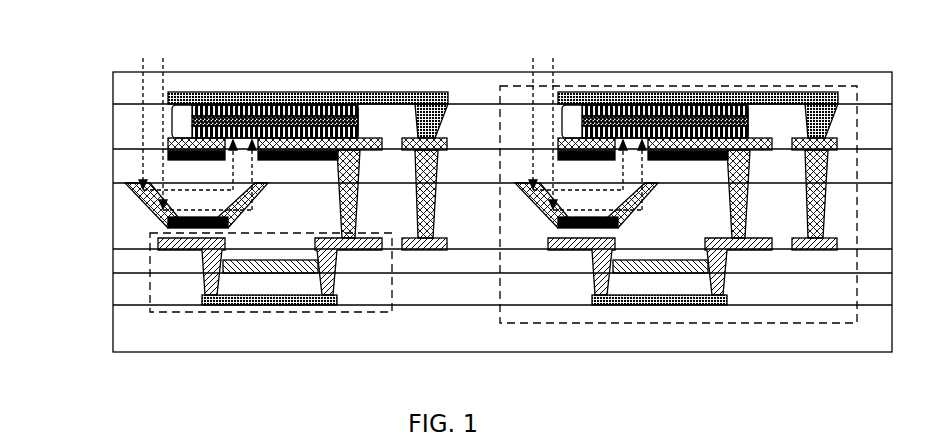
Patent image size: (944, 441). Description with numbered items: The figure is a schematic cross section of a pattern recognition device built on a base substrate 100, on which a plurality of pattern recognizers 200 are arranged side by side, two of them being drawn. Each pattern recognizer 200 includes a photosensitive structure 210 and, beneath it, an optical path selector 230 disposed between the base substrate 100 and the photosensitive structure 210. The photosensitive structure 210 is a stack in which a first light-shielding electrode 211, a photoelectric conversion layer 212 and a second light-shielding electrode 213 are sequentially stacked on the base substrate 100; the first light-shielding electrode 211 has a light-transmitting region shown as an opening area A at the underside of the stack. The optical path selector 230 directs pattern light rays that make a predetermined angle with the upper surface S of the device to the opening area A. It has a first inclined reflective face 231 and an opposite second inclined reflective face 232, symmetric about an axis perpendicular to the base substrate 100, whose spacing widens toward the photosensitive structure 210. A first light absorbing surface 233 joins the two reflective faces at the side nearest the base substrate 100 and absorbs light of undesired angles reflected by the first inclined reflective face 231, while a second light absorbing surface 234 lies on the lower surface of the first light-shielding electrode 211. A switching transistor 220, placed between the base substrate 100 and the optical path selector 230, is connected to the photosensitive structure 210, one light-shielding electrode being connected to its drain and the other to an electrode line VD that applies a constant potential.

The base substrate 100 is at (157, 328).
The pattern recognizer 200 is at (660, 86).
The photosensitive structure 210 is at (229, 163).
The first light-shielding electrode 211 is at (168, 142).
The photoelectric conversion layer 212 is at (172, 121).
The second light-shielding electrode 213 is at (168, 98).
The switching transistor 220 is at (295, 313).
The optical path selector 230 is at (172, 223).
The first inclined reflective face 231 is at (143, 203).
The second inclined reflective face 232 is at (143, 200).
The first light absorbing surface 233 is at (165, 231).
The second light absorbing surface 234 is at (172, 158).
The opening area A is at (267, 98).
The upper surface S is at (838, 72).
The electrode line VD is at (427, 250).